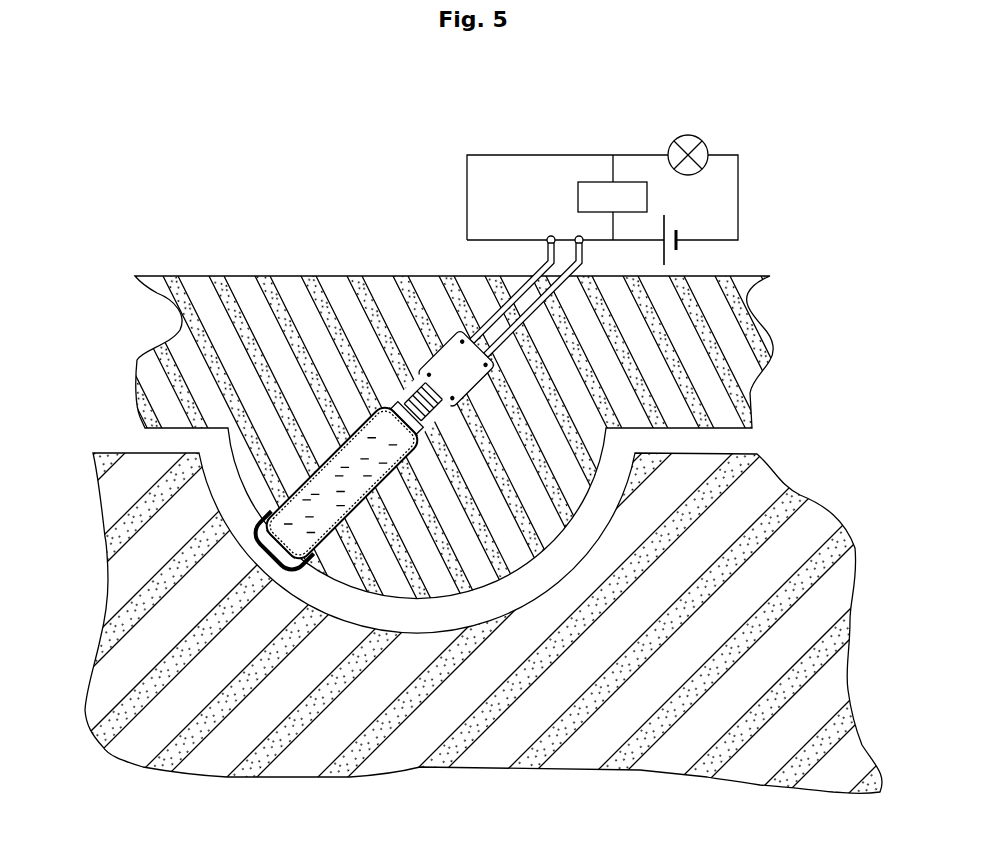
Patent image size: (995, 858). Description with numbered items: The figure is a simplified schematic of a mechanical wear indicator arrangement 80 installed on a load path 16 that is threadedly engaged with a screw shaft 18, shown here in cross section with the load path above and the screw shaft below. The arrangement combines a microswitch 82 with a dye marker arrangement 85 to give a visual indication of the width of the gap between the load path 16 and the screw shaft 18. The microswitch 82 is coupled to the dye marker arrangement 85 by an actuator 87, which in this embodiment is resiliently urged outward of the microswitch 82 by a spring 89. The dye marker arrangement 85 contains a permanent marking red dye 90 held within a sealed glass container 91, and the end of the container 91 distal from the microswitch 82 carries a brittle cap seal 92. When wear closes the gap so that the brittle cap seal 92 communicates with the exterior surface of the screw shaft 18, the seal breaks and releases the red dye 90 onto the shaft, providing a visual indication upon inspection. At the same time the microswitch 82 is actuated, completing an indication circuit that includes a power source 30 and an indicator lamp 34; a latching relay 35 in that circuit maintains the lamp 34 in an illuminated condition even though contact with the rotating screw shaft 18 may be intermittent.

The load path 16 is at (152, 382).
The screw shaft 18 is at (130, 578).
The power source 30 is at (678, 238).
The indicator lamp 34 is at (700, 143).
The relay 35 is at (597, 190).
The mechanical wear indicator arrangement 80 is at (497, 625).
The microswitch 82 is at (455, 331).
The dye marker arrangement 85 is at (380, 490).
The actuator 87 is at (432, 442).
The spring 89 is at (440, 410).
The permanent marking red dye 90 is at (322, 495).
The sealed glass container 91 is at (340, 455).
The brittle cap seal 92 is at (268, 538).